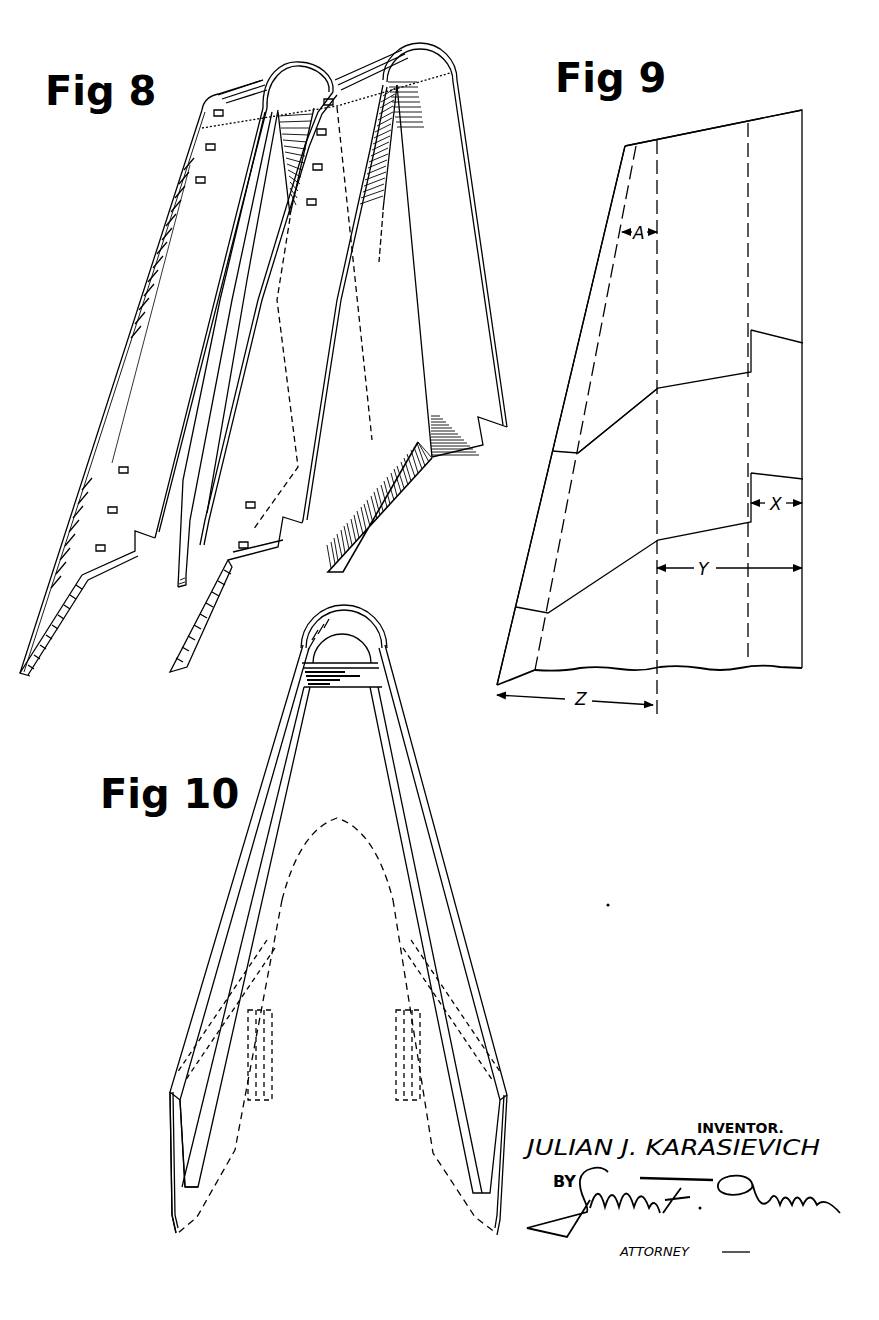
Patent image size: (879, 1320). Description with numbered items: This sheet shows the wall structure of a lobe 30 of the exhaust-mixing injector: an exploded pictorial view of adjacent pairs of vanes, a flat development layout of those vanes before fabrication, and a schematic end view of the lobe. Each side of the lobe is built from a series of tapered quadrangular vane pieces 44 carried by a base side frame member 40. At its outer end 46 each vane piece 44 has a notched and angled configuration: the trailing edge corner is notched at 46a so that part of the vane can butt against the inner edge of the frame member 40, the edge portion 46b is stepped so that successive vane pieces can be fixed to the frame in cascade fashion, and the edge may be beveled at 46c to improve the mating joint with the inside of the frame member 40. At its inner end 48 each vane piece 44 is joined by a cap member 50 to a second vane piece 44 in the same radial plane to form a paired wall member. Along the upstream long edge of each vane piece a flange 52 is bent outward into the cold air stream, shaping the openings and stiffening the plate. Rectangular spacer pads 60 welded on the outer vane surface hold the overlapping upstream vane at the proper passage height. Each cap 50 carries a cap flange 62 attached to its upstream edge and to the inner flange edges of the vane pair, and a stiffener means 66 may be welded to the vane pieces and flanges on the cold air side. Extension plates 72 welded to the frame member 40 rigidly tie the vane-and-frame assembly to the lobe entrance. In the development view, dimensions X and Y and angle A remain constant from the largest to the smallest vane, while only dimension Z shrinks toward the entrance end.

In FIG. 10, the lobe 30 is at (352, 754).
In FIG. 10, the base side frame member 40 is at (170, 1184).
In FIG. 8, the vane piece 44 is at (322, 297).
In FIG. 9, the vane piece 44 is at (577, 353).
In FIG. 10, the vane piece 44 is at (278, 724).
In FIG. 8, the outer end of vane piece 46 is at (414, 507).
In FIG. 9, the outer end of vane piece 46 is at (701, 396).
In FIG. 10, the outer end of vane piece 46 is at (156, 1231).
In FIG. 8, the notch 46a is at (489, 432).
In FIG. 9, the notch 46a is at (774, 350).
In FIG. 8, the stepped edge portion 46b is at (377, 536).
In FIG. 9, the stepped edge portion 46b is at (662, 389).
In FIG. 10, the stepped edge portion 46b is at (183, 1130).
In FIG. 8, the beveled edge 46c is at (232, 566).
In FIG. 8, the inner end of vane piece 48 is at (434, 80).
In FIG. 9, the inner end of vane piece 48 is at (723, 126).
In FIG. 10, the inner end of vane piece 48 is at (378, 654).
In FIG. 8, the cap member 50 is at (380, 53).
In FIG. 10, the cap member 50 is at (355, 606).
In FIG. 8, the flange 52 is at (190, 650).
In FIG. 9, the flange 52 is at (522, 566).
In FIG. 10, the flange 52 is at (215, 1138).
In FIG. 8, the air passage spacer pad 60 is at (318, 214).
In FIG. 10, the cap flange 62 is at (371, 641).
In FIG. 10, the stiffener means 66 is at (368, 678).
In FIG. 10, the extension plate 72 is at (263, 1048).